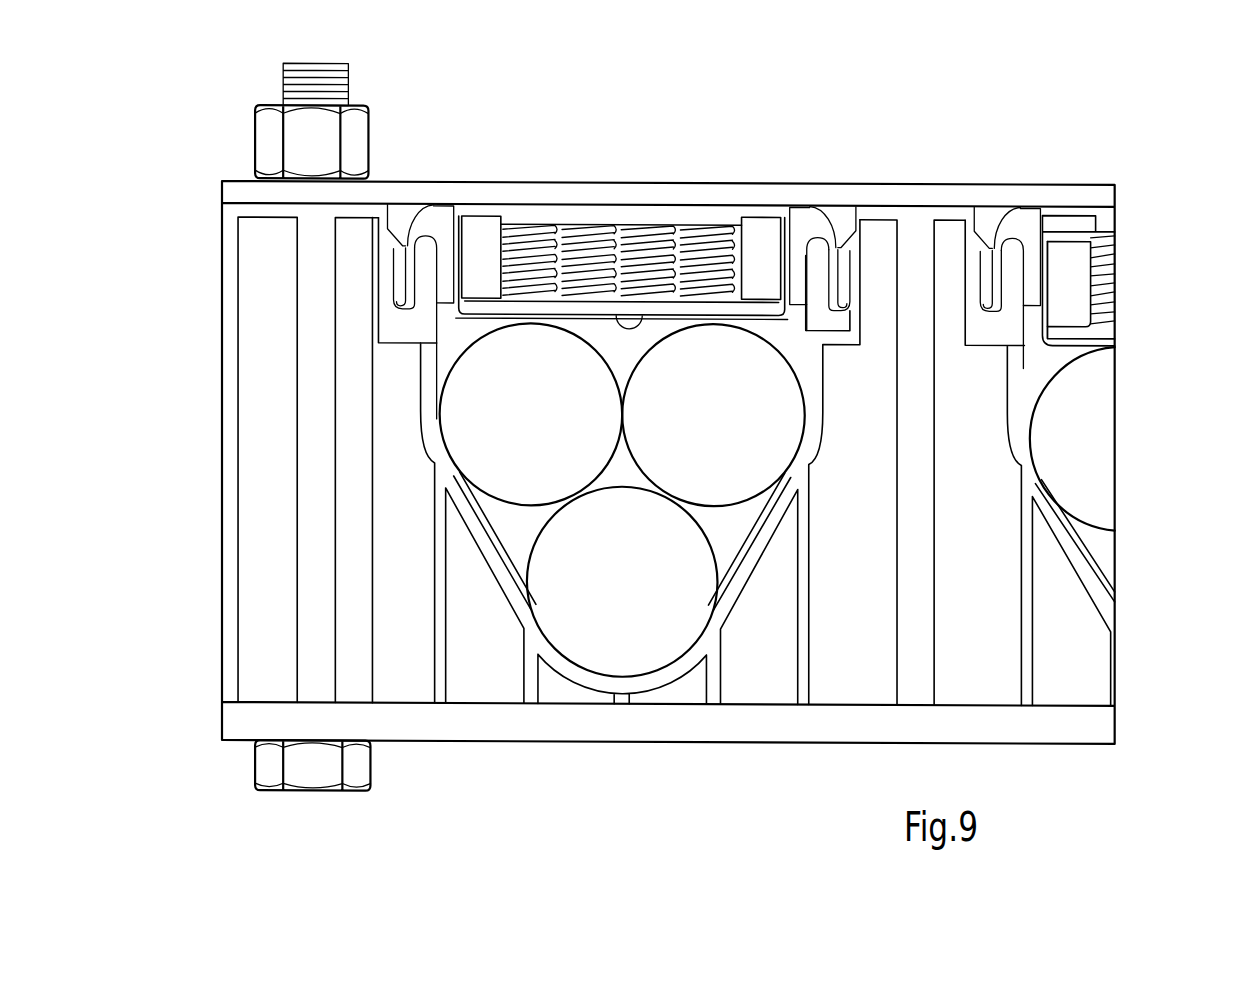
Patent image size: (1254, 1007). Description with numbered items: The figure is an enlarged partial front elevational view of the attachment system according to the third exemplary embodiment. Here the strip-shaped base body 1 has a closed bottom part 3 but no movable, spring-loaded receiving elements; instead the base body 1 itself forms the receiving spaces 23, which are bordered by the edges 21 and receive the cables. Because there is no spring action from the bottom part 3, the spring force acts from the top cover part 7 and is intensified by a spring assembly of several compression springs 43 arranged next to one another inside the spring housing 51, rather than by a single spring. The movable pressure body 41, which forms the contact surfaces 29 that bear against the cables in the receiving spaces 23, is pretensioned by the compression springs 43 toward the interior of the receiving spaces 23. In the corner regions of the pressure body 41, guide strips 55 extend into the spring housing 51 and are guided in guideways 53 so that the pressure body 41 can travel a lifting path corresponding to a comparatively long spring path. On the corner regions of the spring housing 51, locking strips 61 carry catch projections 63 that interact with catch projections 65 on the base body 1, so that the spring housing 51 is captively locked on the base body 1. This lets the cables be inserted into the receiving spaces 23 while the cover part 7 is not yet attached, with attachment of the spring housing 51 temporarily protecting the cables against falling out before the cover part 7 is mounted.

The base body 1 is at (260, 578).
The bottom part 3 is at (760, 675).
The cover part 7 is at (1077, 238).
The edges 21 is at (492, 557).
The receiving spaces 23 is at (517, 533).
The contact surfaces 29 is at (650, 322).
The pressure body 41 is at (688, 305).
The compression springs 43 is at (593, 245).
The spring housing 51 is at (613, 210).
The guideways 53 is at (458, 240).
The guide strips 55 is at (483, 233).
The locking strips 61 is at (403, 247).
The catch projections 63 is at (378, 308).
The catch projections 65 is at (403, 273).